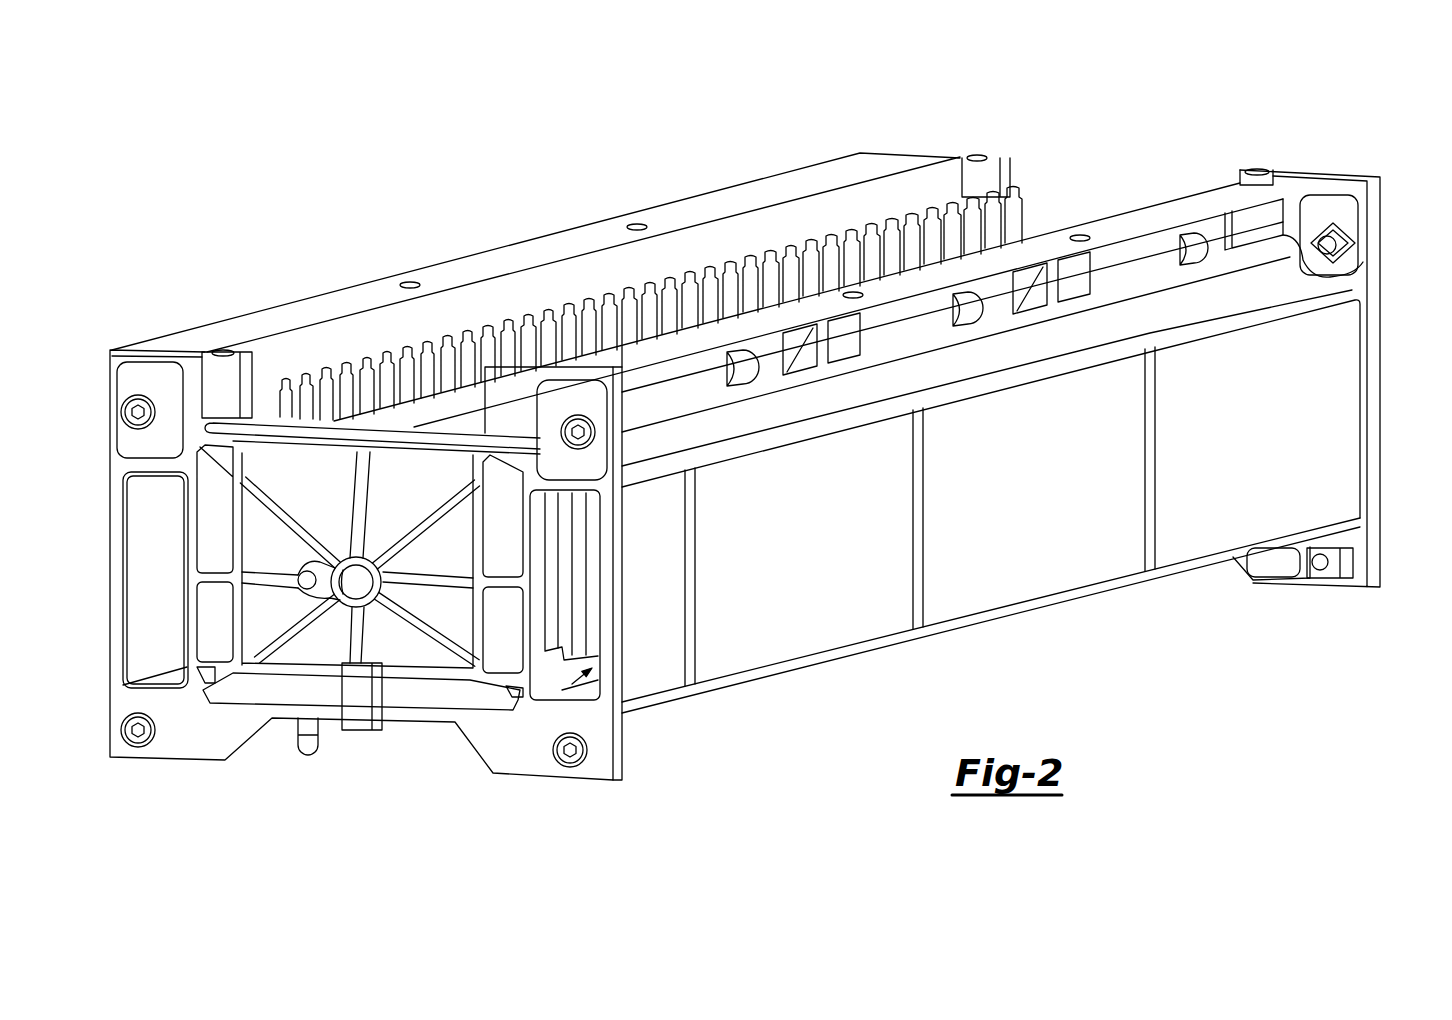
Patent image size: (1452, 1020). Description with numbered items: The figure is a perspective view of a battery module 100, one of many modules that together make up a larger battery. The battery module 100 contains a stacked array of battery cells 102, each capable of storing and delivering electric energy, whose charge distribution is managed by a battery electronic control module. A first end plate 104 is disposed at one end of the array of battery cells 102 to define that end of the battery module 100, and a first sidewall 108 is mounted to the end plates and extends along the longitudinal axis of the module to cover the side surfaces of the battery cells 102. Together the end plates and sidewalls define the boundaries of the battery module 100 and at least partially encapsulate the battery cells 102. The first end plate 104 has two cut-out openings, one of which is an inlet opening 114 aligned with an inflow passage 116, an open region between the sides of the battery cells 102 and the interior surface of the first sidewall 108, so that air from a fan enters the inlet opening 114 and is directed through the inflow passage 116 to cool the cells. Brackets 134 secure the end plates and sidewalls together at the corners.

The battery module 100 is at (320, 148).
The battery cells 102 is at (405, 403).
The first end plate 104 is at (197, 738).
The first sidewall 108 is at (783, 633).
The inlet opening 114 is at (540, 672).
The inflow passage 116 is at (560, 688).
The brackets 134 is at (1347, 197).